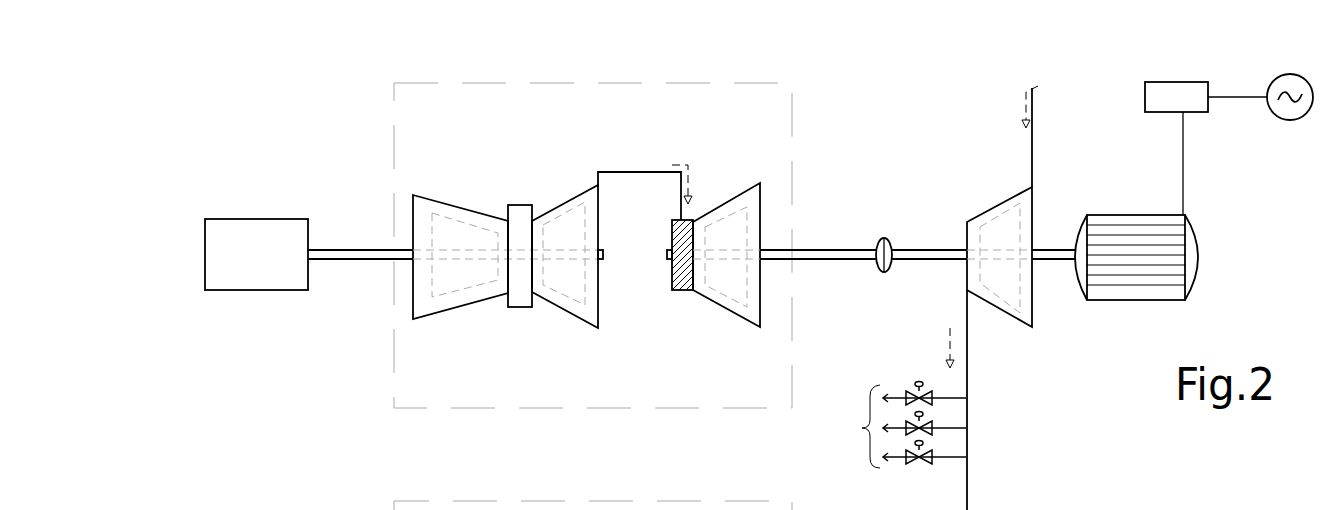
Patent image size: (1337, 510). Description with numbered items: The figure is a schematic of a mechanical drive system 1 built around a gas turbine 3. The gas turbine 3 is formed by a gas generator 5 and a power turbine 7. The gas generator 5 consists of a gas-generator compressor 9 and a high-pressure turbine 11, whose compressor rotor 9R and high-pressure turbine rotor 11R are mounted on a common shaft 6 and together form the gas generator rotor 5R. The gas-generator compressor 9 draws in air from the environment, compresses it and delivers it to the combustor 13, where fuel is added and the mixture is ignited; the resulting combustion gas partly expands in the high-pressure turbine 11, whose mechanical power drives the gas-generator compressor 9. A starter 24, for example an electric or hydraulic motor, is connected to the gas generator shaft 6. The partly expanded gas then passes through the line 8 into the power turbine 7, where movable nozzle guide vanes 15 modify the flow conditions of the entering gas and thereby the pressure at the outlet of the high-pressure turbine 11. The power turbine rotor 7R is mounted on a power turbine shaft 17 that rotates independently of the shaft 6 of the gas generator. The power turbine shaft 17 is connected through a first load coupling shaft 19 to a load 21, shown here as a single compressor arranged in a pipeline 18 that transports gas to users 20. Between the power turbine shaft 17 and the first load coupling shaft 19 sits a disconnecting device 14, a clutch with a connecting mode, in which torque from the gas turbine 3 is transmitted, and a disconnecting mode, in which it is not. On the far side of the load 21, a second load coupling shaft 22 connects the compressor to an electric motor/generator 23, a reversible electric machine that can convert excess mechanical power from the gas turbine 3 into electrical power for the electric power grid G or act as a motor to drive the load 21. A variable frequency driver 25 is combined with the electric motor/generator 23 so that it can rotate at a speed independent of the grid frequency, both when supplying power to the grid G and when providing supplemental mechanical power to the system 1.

The mechanical drive system 1 is at (561, 436).
The gas turbine 3 is at (481, 414).
The gas generator 5 is at (505, 114).
The gas generator rotor 5R is at (611, 262).
The common shaft 6 is at (335, 248).
The power turbine 7 is at (727, 189).
The power turbine rotor 7R is at (716, 303).
The line 8 is at (645, 170).
The gas-generator compressor 9 is at (448, 192).
The compressor rotor 9R is at (443, 278).
The high-pressure turbine 11 is at (568, 188).
The high-pressure turbine rotor 11R is at (575, 300).
The combustor 13 is at (519, 308).
The disconnecting device 14 is at (884, 274).
The movable nozzle guide vanes 15 is at (680, 292).
The power turbine shaft 17 is at (827, 252).
The pipeline 18 is at (968, 345).
The first load coupling shaft 19 is at (918, 253).
The users 20 is at (855, 426).
The load 21 is at (995, 197).
The second load coupling shaft 22 is at (1048, 256).
The electric motor/generator 23 is at (1137, 273).
The starter 24 is at (247, 242).
The variable frequency driver 25 is at (1145, 98).
The electric power grid G is at (1291, 74).